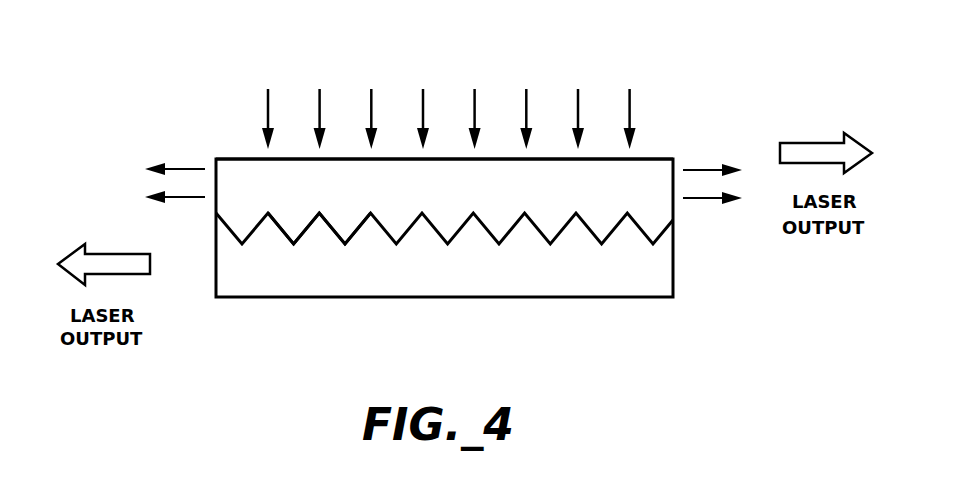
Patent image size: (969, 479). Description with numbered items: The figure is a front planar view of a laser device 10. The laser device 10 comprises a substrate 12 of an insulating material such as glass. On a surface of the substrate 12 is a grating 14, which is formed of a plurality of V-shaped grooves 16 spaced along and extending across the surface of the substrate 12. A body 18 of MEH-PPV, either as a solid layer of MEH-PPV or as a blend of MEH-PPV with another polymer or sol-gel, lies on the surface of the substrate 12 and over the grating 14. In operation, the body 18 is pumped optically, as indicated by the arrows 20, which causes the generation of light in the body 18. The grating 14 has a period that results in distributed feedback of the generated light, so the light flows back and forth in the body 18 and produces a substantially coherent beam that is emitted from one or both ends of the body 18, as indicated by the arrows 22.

The laser device 10 is at (292, 82).
The substrate 12 is at (655, 274).
The grating 14 is at (626, 212).
The V-shaped grooves 16 is at (294, 245).
The body 18 is at (638, 166).
The arrows 20 is at (320, 97).
The arrows 22 is at (183, 197).